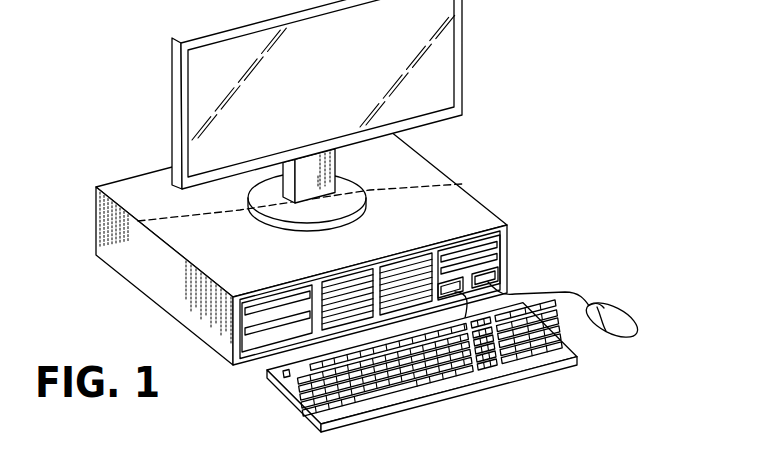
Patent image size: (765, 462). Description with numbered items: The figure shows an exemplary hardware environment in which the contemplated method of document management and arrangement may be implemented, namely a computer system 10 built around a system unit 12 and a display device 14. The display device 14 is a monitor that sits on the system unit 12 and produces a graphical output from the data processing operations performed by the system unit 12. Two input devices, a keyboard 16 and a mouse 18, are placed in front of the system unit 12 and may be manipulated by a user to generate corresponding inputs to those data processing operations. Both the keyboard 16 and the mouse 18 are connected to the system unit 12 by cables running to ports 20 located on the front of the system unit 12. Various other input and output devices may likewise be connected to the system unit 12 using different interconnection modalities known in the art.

The computer system 10 is at (76, 62).
The system unit 12 is at (257, 261).
The display device 14 is at (334, 87).
The keyboard 16 is at (527, 375).
The mouse 18 is at (627, 317).
The ports 20 is at (484, 280).